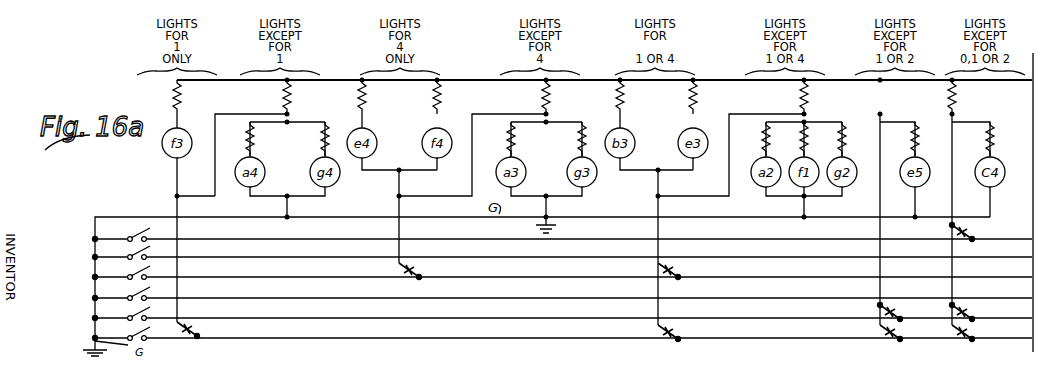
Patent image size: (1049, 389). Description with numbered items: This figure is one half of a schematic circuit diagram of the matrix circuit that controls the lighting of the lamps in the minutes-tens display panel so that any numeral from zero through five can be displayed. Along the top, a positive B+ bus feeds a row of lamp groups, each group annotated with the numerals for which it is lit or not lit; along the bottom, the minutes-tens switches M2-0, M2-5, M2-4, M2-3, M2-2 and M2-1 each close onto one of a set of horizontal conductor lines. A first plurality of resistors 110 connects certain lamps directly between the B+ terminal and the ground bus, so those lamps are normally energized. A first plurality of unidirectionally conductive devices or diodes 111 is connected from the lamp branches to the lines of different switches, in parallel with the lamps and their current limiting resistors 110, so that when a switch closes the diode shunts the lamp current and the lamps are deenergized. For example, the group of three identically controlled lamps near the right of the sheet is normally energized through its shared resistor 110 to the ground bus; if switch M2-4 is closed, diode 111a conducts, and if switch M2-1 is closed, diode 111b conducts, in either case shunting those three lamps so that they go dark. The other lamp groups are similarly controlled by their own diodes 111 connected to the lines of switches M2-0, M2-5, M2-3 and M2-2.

The resistors 110 is at (284, 97).
The diodes 111 is at (192, 331).
The diode 111a is at (676, 270).
The diode 111b is at (676, 332).
The minutes-tens switch M2-0 is at (121, 237).
The minutes-tens switch M2-1 is at (121, 336).
The minutes-tens switch M2-2 is at (121, 316).
The minutes-tens switch M2-3 is at (121, 296).
The minutes-tens switch M2-4 is at (121, 275).
The minutes-tens switch M2-5 is at (121, 255).